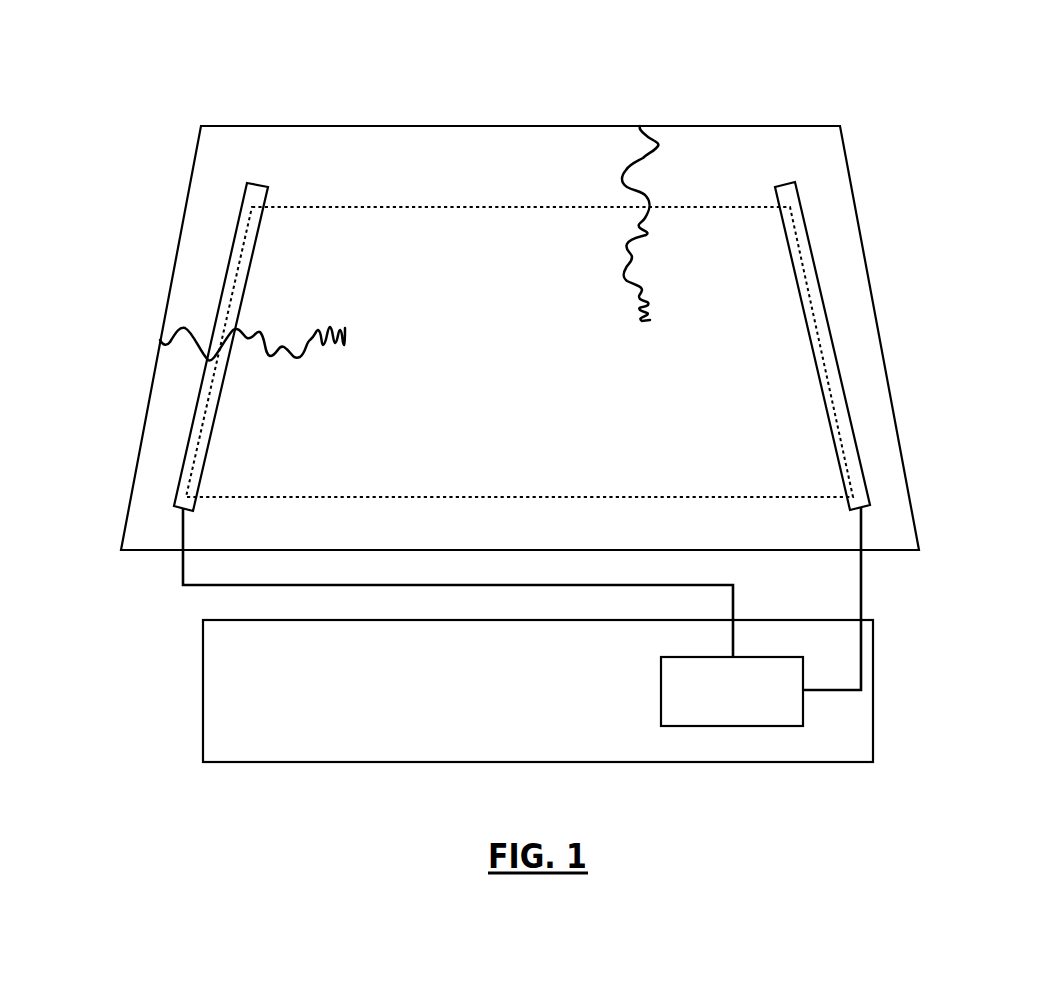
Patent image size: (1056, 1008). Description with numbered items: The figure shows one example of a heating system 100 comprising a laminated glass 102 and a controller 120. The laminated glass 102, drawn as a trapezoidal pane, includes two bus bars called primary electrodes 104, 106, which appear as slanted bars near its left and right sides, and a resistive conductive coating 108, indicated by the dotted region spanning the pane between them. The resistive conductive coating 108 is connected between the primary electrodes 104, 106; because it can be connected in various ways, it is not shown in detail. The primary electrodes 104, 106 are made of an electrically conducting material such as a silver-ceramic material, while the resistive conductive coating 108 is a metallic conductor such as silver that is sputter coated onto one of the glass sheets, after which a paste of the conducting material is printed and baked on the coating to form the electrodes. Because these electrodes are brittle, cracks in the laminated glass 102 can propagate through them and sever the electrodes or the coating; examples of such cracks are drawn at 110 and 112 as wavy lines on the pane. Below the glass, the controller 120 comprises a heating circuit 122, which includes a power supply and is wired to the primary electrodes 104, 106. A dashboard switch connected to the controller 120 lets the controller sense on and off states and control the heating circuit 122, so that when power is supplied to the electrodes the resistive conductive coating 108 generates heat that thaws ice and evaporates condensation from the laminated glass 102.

The heating system 100 is at (593, 93).
The laminated glass 102 is at (762, 125).
The primary electrode 104 is at (230, 282).
The primary electrode 106 is at (855, 465).
The resistive conductive coating 108 is at (813, 305).
The crack 110 is at (167, 340).
The crack 112 is at (655, 147).
The controller 120 is at (875, 727).
The heating circuit 122 is at (745, 653).